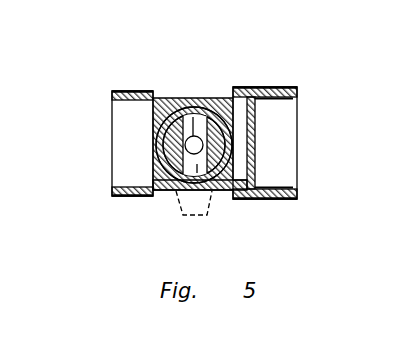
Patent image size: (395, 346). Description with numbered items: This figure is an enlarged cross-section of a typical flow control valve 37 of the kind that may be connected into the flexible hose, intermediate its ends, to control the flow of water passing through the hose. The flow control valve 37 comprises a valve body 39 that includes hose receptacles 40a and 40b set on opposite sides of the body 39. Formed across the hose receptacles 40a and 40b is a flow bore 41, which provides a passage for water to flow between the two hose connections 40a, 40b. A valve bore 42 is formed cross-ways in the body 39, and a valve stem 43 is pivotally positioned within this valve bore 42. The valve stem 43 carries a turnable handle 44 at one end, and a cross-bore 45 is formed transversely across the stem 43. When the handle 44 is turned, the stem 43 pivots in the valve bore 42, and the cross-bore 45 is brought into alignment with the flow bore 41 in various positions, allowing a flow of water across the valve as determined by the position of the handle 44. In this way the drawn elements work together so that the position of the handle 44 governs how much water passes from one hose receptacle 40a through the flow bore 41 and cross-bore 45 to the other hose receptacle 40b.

The flow control valve 37 is at (112, 77).
The valve body 39 is at (202, 100).
The hose receptacle 40a is at (127, 197).
The hose receptacle 40b is at (277, 190).
The flow bore 41 is at (132, 127).
The valve bore 42 is at (236, 123).
The valve stem 43 is at (163, 100).
The turnable handle 44 is at (179, 203).
The cross-bore 45 is at (231, 191).